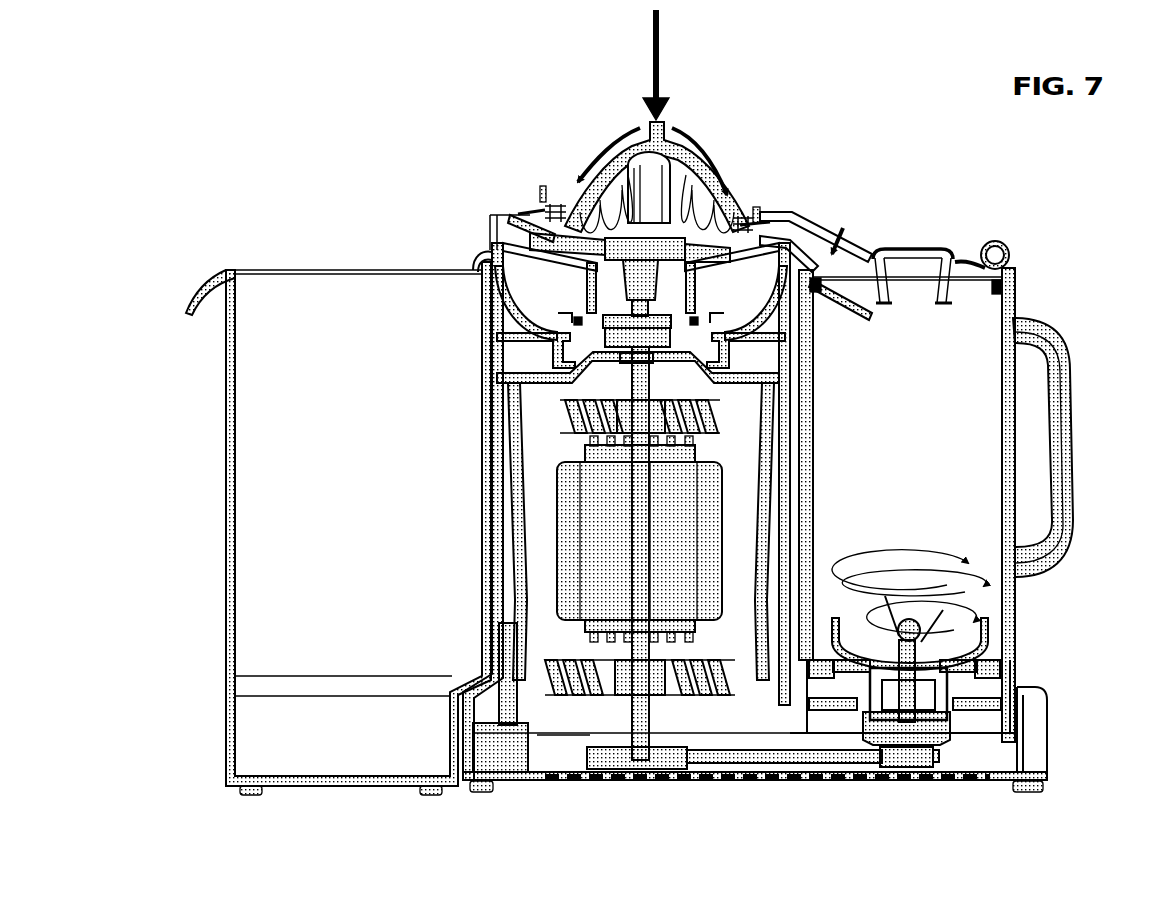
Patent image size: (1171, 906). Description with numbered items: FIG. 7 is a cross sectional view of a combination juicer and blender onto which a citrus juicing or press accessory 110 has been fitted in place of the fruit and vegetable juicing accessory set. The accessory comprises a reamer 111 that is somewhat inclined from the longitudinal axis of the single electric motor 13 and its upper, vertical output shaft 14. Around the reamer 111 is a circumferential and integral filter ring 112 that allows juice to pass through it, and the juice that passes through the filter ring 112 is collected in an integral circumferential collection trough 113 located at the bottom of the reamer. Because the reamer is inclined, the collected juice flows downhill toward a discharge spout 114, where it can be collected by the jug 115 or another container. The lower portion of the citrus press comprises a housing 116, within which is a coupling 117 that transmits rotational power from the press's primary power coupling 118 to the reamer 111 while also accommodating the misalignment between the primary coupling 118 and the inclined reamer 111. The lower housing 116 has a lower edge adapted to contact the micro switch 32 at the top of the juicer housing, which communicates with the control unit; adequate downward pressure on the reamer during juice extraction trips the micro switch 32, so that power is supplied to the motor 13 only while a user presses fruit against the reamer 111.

The citrus press accessory 110 is at (740, 116).
The reamer 111 is at (720, 216).
The filter ring 112 is at (540, 200).
The collection trough 113 is at (532, 215).
The discharge spout 114 is at (800, 243).
The jug 115 is at (1015, 294).
The housing 116 is at (662, 283).
The coupling 117 is at (780, 332).
The primary power coupling 118 is at (680, 327).
The electric motor 13 is at (678, 496).
The upper output shaft 14 is at (612, 392).
The micro switch 32 is at (582, 333).